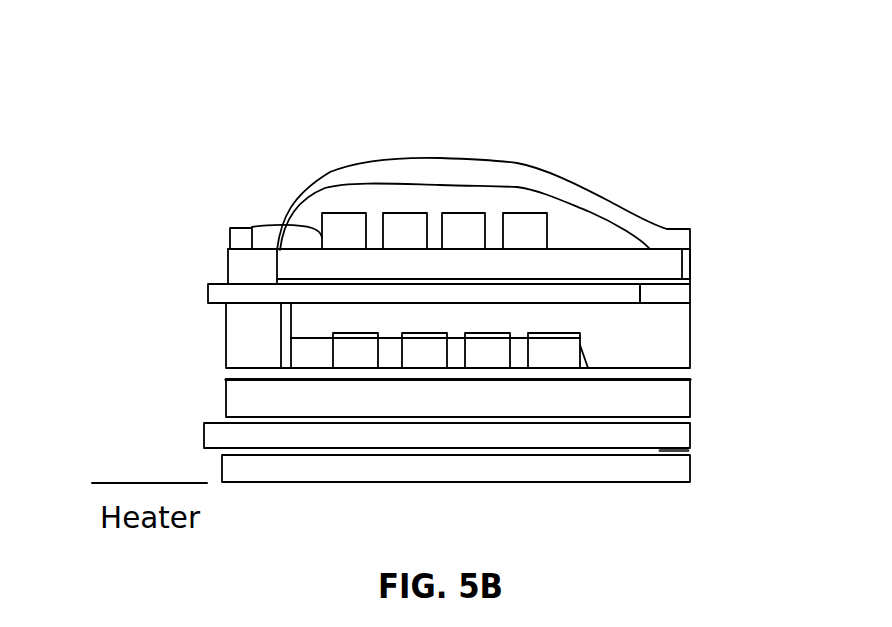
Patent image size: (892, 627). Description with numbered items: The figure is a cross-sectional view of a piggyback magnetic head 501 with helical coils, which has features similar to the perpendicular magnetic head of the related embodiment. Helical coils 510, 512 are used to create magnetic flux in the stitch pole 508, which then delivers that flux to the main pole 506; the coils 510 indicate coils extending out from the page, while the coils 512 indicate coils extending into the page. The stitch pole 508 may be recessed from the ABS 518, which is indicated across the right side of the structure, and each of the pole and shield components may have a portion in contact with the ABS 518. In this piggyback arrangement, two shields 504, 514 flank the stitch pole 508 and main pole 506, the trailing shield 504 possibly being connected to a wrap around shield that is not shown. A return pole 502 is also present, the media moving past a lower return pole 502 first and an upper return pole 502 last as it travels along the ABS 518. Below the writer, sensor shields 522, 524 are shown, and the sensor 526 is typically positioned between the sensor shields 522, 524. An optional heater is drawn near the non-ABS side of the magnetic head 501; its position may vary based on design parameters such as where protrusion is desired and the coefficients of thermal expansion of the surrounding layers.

The piggyback magnetic head 501 is at (311, 137).
The return pole 502 is at (620, 193).
The trailing shield 504 is at (692, 265).
The main pole 506 is at (690, 285).
The stitch pole 508 is at (630, 306).
The helical coils 510 is at (252, 227).
The helical coils 512 is at (338, 334).
The shield 514 is at (500, 409).
The ABS 518 is at (691, 383).
The sensor shield 522 is at (204, 430).
The sensor shield 524 is at (222, 466).
The sensor 526 is at (680, 450).